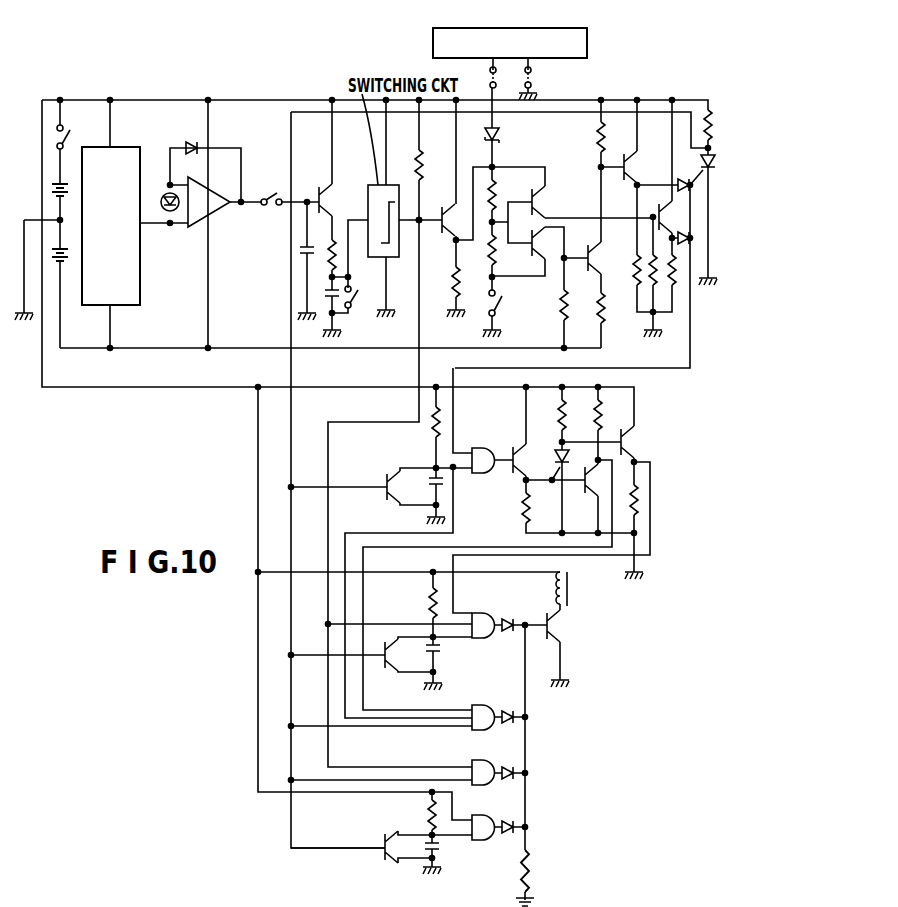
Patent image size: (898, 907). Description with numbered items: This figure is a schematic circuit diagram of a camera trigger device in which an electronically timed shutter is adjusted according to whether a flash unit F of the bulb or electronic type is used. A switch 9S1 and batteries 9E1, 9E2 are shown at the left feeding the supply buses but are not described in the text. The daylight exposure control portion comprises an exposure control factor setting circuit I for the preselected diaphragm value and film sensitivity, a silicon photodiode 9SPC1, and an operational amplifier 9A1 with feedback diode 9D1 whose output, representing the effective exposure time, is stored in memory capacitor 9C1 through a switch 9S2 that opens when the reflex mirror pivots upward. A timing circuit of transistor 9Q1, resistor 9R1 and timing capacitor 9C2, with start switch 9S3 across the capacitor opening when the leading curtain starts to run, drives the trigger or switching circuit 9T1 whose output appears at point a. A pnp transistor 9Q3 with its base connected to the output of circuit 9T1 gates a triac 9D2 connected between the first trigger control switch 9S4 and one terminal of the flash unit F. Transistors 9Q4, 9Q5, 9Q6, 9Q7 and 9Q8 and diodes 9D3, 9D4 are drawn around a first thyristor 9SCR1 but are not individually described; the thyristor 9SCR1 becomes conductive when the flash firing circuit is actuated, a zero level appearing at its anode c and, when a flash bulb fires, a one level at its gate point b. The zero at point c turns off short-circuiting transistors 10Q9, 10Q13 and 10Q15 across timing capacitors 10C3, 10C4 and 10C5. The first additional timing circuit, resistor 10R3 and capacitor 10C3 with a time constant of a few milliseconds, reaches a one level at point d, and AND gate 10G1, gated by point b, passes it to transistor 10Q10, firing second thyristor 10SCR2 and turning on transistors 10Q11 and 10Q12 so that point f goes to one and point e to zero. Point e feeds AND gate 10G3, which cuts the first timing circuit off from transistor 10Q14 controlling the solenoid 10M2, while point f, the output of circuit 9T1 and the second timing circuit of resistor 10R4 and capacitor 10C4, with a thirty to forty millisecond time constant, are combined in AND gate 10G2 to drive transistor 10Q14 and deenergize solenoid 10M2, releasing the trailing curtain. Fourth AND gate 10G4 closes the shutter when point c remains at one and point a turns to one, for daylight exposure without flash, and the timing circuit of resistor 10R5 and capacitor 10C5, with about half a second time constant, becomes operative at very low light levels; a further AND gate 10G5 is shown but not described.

The flash unit F is at (587, 45).
The exposure control factor setting circuit I is at (120, 147).
The power switch 9S1 is at (77, 137).
The battery 9E1 is at (52, 190).
The battery 9E2 is at (64, 266).
The feedback diode 9D1 is at (205, 162).
The operational amplifier 9A1 is at (216, 202).
The photosensitive element 9SPC1 is at (166, 212).
The switch 9S2 is at (276, 212).
The transistor 9Q1 is at (331, 170).
The memory capacitor 9C1 is at (310, 247).
The resistor 9R1 is at (327, 262).
The timing capacitor 9C2 is at (325, 292).
The start switch 9S3 is at (367, 293).
The trigger circuit 9T1 is at (393, 205).
The point a is at (424, 211).
The pnp transistor 9Q3 is at (460, 205).
The triac 9D2 is at (512, 137).
The first mechanical trigger control switch 9S4 is at (511, 304).
The transistor 9Q4 is at (551, 202).
The transistor 9Q6 is at (550, 243).
The transistor 9Q7 is at (607, 258).
The transistor 9Q8 is at (643, 167).
The transistor 9Q5 is at (676, 217).
The diode 9D4 is at (691, 176).
The diode 9D3 is at (684, 244).
The point b is at (695, 238).
The point c is at (713, 149).
The first thyristor 9SCR1 is at (736, 168).
The resistor 10R3 is at (421, 439).
The capacitor 10C3 is at (421, 500).
The short-circuiting transistor 10Q9 is at (375, 485).
The point d is at (458, 477).
The AND gate 10G1 is at (490, 464).
The transistor 10Q10 is at (543, 460).
The second thyristor 10SCR2 is at (567, 472).
The point e is at (600, 467).
The transistor 10Q11 is at (612, 482).
The transistor 10Q12 is at (649, 442).
The point f is at (637, 470).
The resistor 10R4 is at (421, 614).
The capacitor 10C4 is at (454, 667).
The short-circuiting transistor 10Q13 is at (413, 655).
The AND gate 10G2 is at (497, 626).
The solenoid 10M2 is at (587, 591).
The transistor 10Q14 is at (577, 626).
The AND gate 10G3 is at (502, 716).
The fourth AND gate 10G4 is at (499, 774).
The AND gate 10G5 is at (489, 834).
The resistor 10R5 is at (416, 819).
The capacitor 10C5 is at (451, 857).
The short-circuiting transistor 10Q15 is at (372, 847).